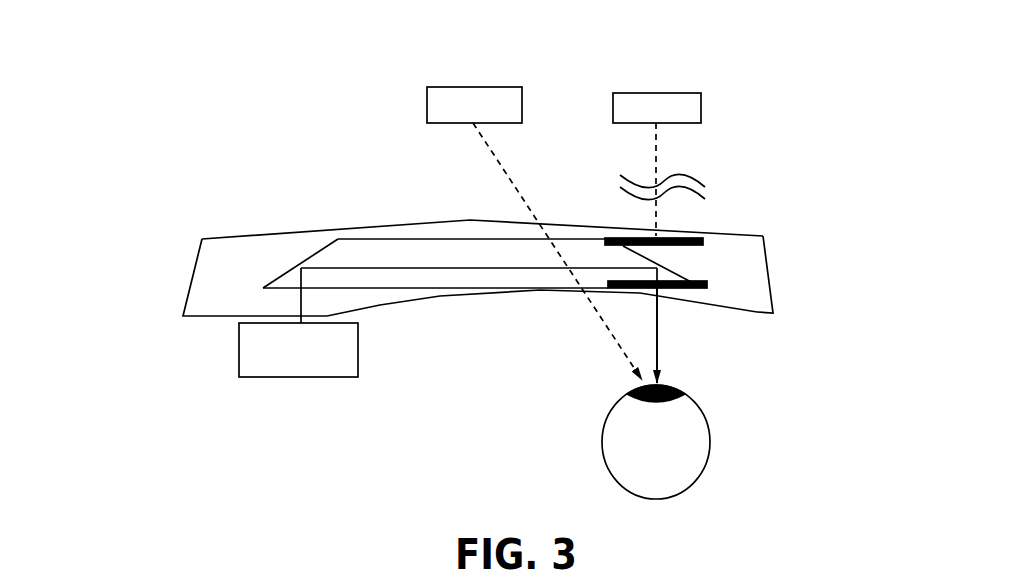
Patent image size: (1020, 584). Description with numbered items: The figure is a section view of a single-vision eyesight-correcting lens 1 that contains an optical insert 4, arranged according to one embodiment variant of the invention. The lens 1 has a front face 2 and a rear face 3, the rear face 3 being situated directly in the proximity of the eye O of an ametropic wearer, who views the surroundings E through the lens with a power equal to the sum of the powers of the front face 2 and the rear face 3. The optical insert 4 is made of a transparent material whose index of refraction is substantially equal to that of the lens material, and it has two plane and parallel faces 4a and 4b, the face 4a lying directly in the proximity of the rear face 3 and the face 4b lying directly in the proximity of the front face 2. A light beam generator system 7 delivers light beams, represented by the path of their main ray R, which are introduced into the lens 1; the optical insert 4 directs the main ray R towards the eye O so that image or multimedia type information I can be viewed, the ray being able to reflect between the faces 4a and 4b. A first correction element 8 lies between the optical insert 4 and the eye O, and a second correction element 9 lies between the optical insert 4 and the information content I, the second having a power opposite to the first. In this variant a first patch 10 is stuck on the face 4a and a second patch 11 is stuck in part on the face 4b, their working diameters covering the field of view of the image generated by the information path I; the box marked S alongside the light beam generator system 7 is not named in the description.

The lens 1 is at (551, 272).
The front face 2 is at (347, 227).
The rear face 3 is at (410, 303).
The optical insert 4 is at (353, 239).
The face of the optical insert 4a is at (440, 290).
The face of the optical insert 4b is at (463, 237).
The light beam generator system 7 is at (232, 384).
The first correction element 8 is at (675, 288).
The second correction element 9 is at (724, 160).
The first patch 10 is at (720, 349).
The second patch 11 is at (697, 235).
The surroundings E is at (440, 98).
The main ray R is at (592, 265).
The information I is at (678, 103).
The eye O is at (712, 475).
The source S is at (299, 350).